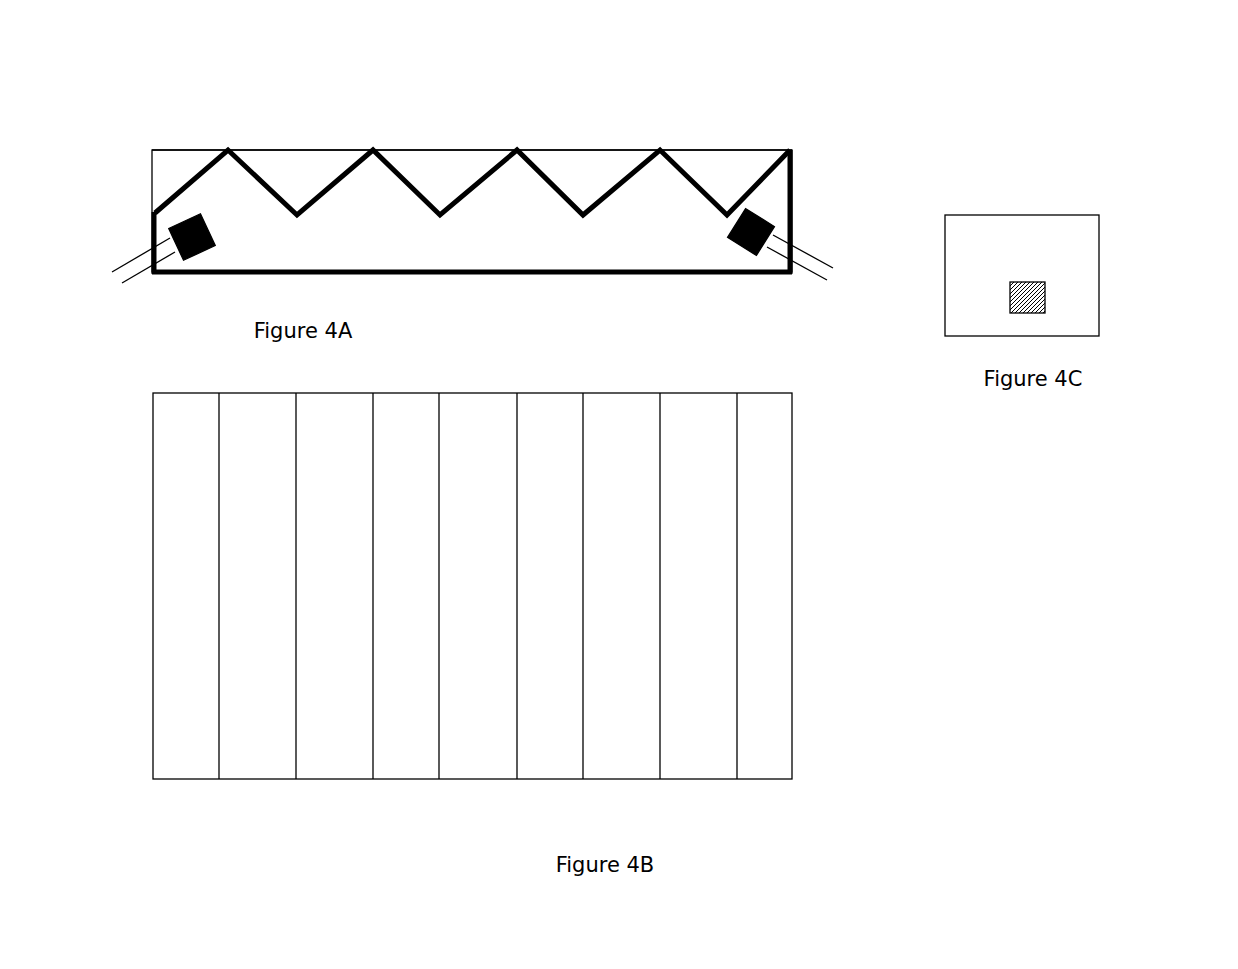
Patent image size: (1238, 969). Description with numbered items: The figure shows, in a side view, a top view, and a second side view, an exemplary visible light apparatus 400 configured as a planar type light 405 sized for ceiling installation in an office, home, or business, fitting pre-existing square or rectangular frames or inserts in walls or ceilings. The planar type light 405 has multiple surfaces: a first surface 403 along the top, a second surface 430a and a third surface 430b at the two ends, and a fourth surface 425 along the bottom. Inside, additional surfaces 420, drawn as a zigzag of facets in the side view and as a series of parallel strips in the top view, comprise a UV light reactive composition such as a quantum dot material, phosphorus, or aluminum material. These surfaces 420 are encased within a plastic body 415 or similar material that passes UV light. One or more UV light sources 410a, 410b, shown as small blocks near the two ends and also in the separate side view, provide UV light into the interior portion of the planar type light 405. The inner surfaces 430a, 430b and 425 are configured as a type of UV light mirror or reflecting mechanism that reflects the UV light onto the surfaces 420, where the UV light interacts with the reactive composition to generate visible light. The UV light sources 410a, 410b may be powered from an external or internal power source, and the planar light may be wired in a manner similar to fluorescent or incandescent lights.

In FIG. 4A, the visible light apparatus 400 is at (846, 95).
In FIG. 4A, the first surface 403 is at (571, 149).
In FIG. 4A, the planar type light 405 is at (183, 148).
In FIG. 4B, the planar type light 405 is at (794, 513).
In FIG. 4C, the planar type light 405 is at (1100, 249).
In FIG. 4A, the UV light source 410a is at (198, 258).
In FIG. 4A, the UV light source 410b is at (738, 249).
In FIG. 4C, the UV light source 410b is at (1045, 303).
In FIG. 4A, the plastic body 415 is at (713, 150).
In FIG. 4A, the additional surfaces 420 is at (263, 172).
In FIG. 4B, the additional surfaces 420 is at (219, 779).
In FIG. 4A, the fourth surface 425 is at (528, 276).
In FIG. 4A, the second surface 430a is at (148, 227).
In FIG. 4A, the third surface 430b is at (793, 203).